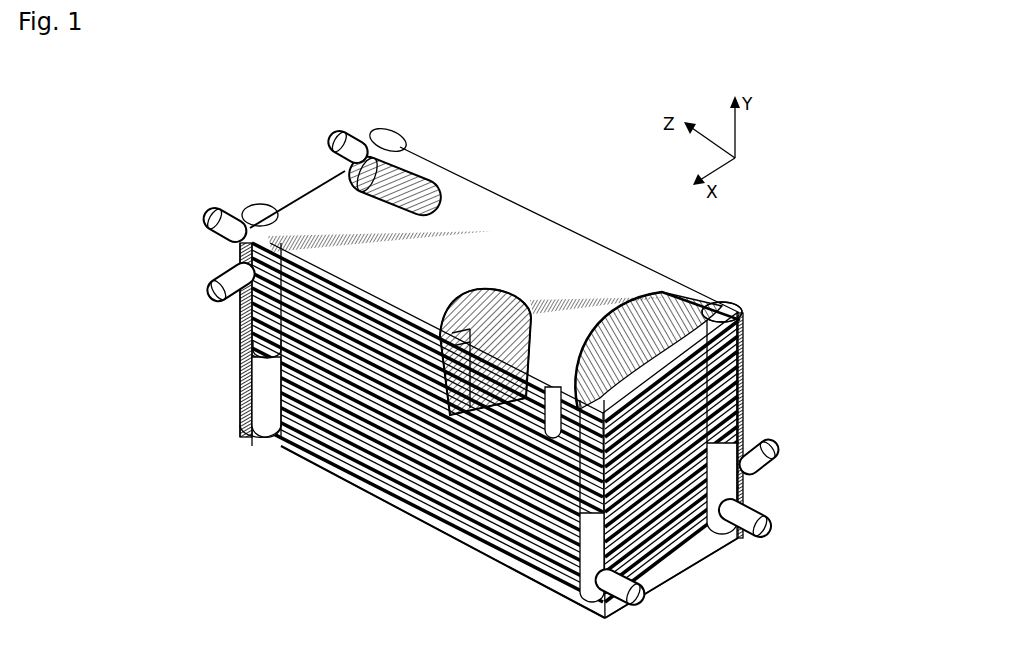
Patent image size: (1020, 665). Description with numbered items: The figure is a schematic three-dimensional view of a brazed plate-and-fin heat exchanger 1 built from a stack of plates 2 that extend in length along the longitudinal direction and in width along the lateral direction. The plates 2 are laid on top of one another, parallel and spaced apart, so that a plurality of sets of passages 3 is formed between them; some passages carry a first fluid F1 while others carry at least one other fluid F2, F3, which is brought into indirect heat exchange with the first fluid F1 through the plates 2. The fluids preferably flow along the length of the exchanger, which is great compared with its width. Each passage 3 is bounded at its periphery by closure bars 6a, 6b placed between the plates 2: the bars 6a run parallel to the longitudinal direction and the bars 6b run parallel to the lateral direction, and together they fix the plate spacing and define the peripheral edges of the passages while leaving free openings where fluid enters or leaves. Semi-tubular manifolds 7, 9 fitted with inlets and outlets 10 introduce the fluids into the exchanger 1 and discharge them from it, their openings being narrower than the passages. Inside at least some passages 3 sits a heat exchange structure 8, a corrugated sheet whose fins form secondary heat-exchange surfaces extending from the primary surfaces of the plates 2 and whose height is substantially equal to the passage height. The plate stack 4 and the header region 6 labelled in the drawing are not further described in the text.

The heat exchanger 1 is at (325, 492).
The plates 2 is at (617, 283).
The passages 3 is at (243, 310).
The plate stack 4 is at (744, 376).
The collector header 6 is at (725, 310).
The closure bar 6a is at (430, 154).
The closure bar 6b is at (303, 188).
The semi-tubular manifold 7 is at (605, 605).
The heat exchange structure 8 is at (485, 319).
The semi-tubular manifold 9 is at (240, 423).
The inlets and outlets 10 is at (217, 215).
The first fluid F1 is at (330, 133).
The second fluid F2 is at (203, 212).
The third fluid F3 is at (207, 297).